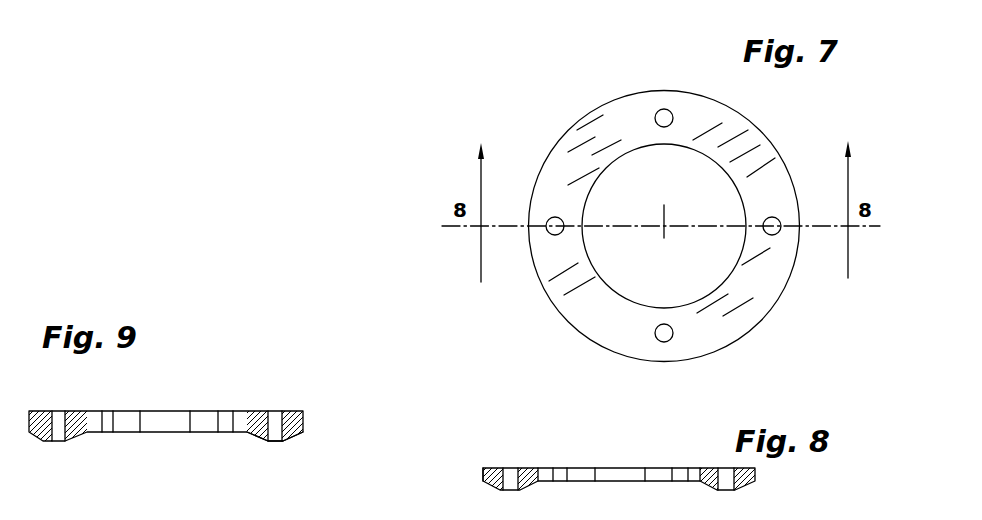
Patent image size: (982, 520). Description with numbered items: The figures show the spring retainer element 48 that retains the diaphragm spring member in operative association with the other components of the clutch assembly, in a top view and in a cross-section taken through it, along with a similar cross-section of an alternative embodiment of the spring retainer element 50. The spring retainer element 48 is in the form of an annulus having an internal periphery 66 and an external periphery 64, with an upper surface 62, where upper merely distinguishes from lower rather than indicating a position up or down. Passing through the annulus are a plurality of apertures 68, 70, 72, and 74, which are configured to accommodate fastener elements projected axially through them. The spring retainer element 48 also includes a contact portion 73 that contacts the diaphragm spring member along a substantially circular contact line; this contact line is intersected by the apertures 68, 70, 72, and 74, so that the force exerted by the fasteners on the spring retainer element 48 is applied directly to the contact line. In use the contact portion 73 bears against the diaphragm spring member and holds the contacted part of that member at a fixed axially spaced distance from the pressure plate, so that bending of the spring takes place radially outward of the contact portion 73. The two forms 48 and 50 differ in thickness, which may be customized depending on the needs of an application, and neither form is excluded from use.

In FIG. 7, the spring retainer element 48 is at (560, 106).
In FIG. 8, the spring retainer element 48 is at (502, 437).
In FIG. 9, the spring retainer element 50 is at (176, 392).
In FIG. 7, the upper surface 62 is at (558, 175).
In FIG. 8, the upper surface 62 is at (497, 468).
In FIG. 7, the external periphery 64 is at (703, 96).
In FIG. 8, the external periphery 64 is at (484, 477).
In FIG. 7, the internal periphery 66 is at (587, 248).
In FIG. 8, the internal periphery 66 is at (626, 475).
In FIG. 7, the aperture 68 is at (555, 235).
In FIG. 8, the aperture 68 is at (510, 479).
In FIG. 7, the aperture 70 is at (660, 110).
In FIG. 7, the aperture 72 is at (778, 230).
In FIG. 8, the aperture 72 is at (731, 468).
In FIG. 8, the contact portion 73 is at (723, 489).
In FIG. 9, the contact portion 73 is at (276, 441).
In FIG. 7, the aperture 74 is at (664, 342).